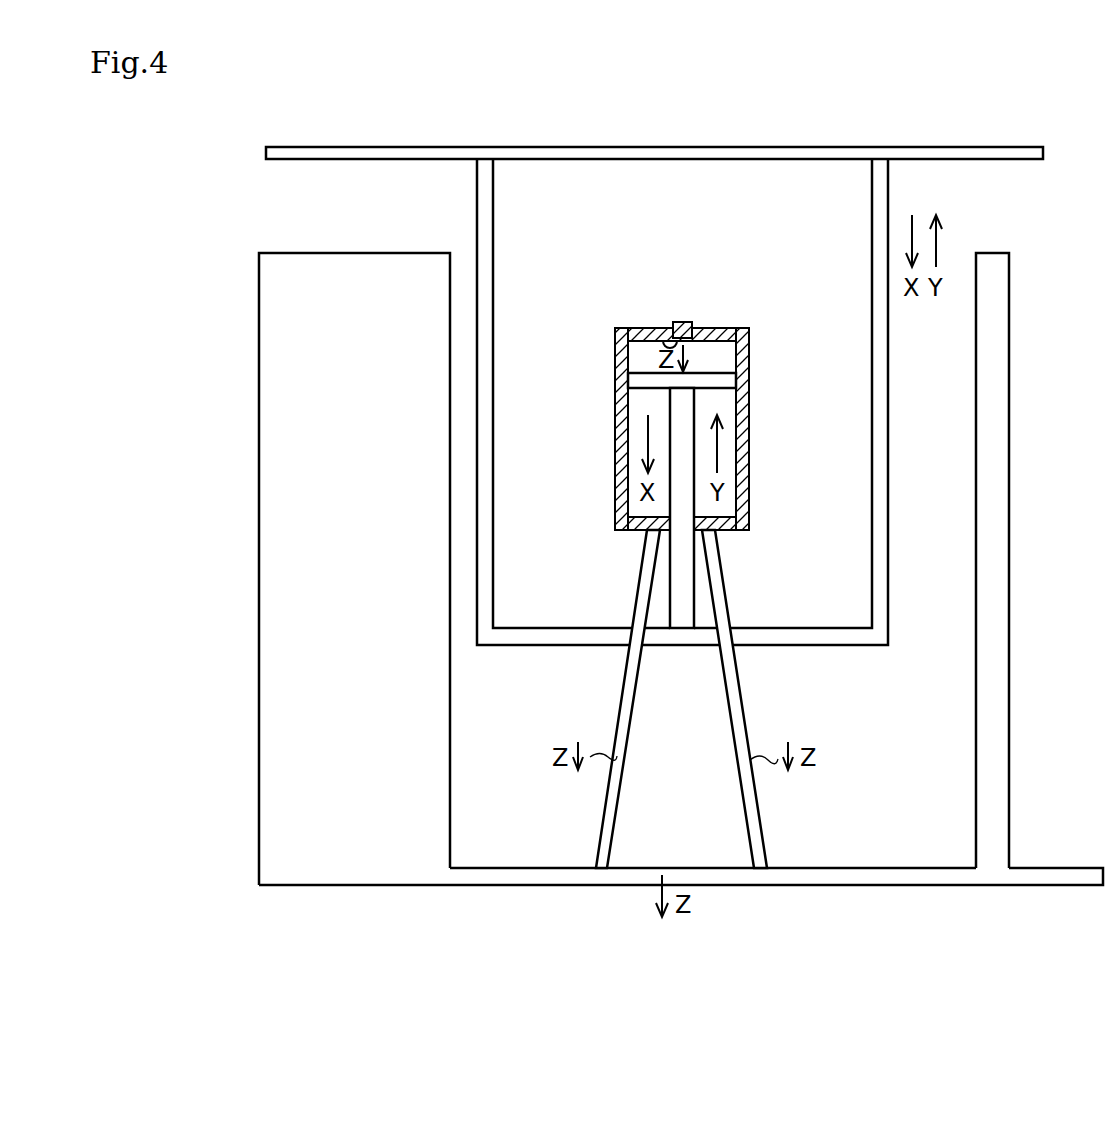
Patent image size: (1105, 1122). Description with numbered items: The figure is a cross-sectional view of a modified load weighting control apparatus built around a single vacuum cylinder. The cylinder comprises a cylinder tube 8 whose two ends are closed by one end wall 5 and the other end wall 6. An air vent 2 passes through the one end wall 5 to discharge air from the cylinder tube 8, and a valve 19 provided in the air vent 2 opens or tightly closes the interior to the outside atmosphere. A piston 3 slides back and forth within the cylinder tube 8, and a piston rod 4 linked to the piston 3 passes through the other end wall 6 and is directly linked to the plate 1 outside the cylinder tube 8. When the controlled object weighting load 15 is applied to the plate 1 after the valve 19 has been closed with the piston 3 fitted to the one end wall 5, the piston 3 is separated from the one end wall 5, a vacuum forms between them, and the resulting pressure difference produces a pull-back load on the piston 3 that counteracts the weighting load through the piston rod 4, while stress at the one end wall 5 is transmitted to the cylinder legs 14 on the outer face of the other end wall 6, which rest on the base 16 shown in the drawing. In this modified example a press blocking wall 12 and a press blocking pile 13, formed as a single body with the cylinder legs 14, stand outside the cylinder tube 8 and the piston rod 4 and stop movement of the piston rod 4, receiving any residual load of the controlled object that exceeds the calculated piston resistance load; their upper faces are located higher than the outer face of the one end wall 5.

The plate 1 is at (808, 155).
The air vent 2 is at (664, 335).
The piston 3 is at (713, 378).
The piston rod 4 is at (687, 462).
The one end wall 5 is at (641, 330).
The other end wall 6 is at (643, 522).
The cylinder tube 8 is at (651, 395).
The press blocking wall 12 is at (280, 752).
The press blocking pile 13 is at (993, 760).
The cylinder legs 14 is at (605, 818).
The controlled object weighting load 15 is at (683, 43).
The base plate 16 is at (707, 878).
The valve 19 is at (690, 322).